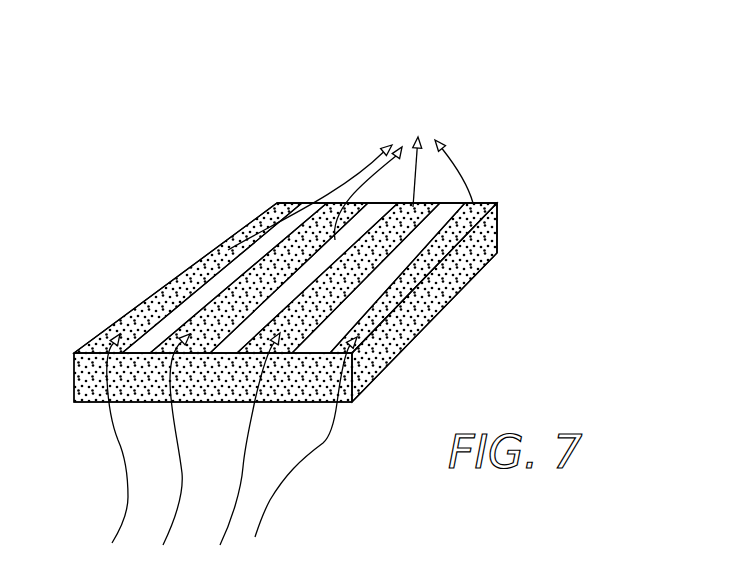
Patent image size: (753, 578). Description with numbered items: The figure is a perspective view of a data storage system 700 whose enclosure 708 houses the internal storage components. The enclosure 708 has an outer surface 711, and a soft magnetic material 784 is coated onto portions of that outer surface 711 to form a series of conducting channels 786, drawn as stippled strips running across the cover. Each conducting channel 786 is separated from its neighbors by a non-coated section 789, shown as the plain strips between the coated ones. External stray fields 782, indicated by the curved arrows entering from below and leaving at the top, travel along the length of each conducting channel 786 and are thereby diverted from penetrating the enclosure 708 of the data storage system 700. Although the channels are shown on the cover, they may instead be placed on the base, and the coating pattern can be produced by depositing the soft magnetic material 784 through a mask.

The data storage system 700 is at (525, 143).
The outer surface 711 is at (495, 230).
The enclosure 708 is at (466, 272).
The soft magnetic material 784 is at (393, 345).
The conducting channels 786 is at (390, 293).
The non-coated section 789 is at (408, 250).
The external stray fields 782 is at (455, 164).